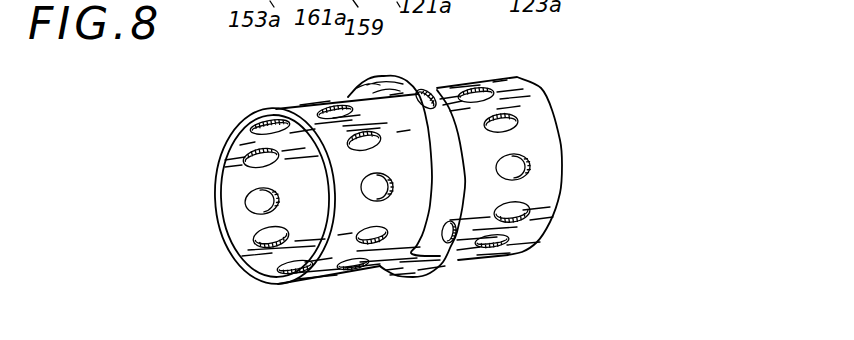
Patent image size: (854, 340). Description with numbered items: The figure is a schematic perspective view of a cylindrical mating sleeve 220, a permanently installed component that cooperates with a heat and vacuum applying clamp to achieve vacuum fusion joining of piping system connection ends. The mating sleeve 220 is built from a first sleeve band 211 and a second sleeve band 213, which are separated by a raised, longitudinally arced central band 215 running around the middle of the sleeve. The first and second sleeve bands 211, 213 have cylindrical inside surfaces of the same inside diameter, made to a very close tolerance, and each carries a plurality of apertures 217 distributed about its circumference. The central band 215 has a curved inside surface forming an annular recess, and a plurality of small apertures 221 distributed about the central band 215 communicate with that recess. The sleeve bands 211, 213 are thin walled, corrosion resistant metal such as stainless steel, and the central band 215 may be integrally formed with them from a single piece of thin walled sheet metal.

The mating sleeve 220 is at (545, 98).
The first sleeve band 211 is at (336, 266).
The second sleeve band 213 is at (509, 250).
The longitudinally arced central band 215 is at (403, 275).
The apertures 217 is at (516, 167).
The small apertures 221 is at (428, 92).